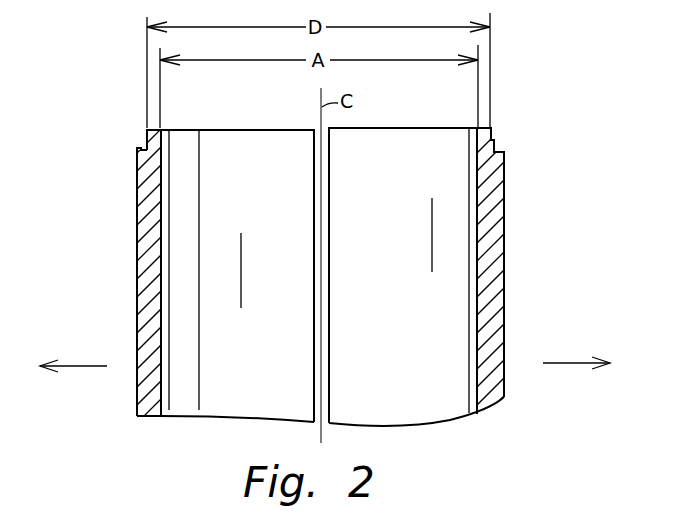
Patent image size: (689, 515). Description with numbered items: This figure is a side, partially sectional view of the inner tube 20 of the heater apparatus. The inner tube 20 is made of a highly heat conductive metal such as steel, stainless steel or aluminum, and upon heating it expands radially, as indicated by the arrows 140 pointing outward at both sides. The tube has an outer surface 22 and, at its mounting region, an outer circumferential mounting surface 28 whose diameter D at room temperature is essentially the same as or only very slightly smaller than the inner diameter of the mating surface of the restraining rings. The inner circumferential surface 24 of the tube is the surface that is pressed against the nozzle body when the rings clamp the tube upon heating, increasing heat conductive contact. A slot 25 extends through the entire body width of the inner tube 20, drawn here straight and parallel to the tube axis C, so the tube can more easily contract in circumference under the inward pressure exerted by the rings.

The inner tube 20 is at (459, 307).
The outer surface 22 is at (505, 238).
The inner circumferential surface 24 is at (481, 263).
The slot 25 is at (318, 126).
The outer circumferential mounting surface 28 is at (494, 140).
The radial expansion 140 is at (85, 367).